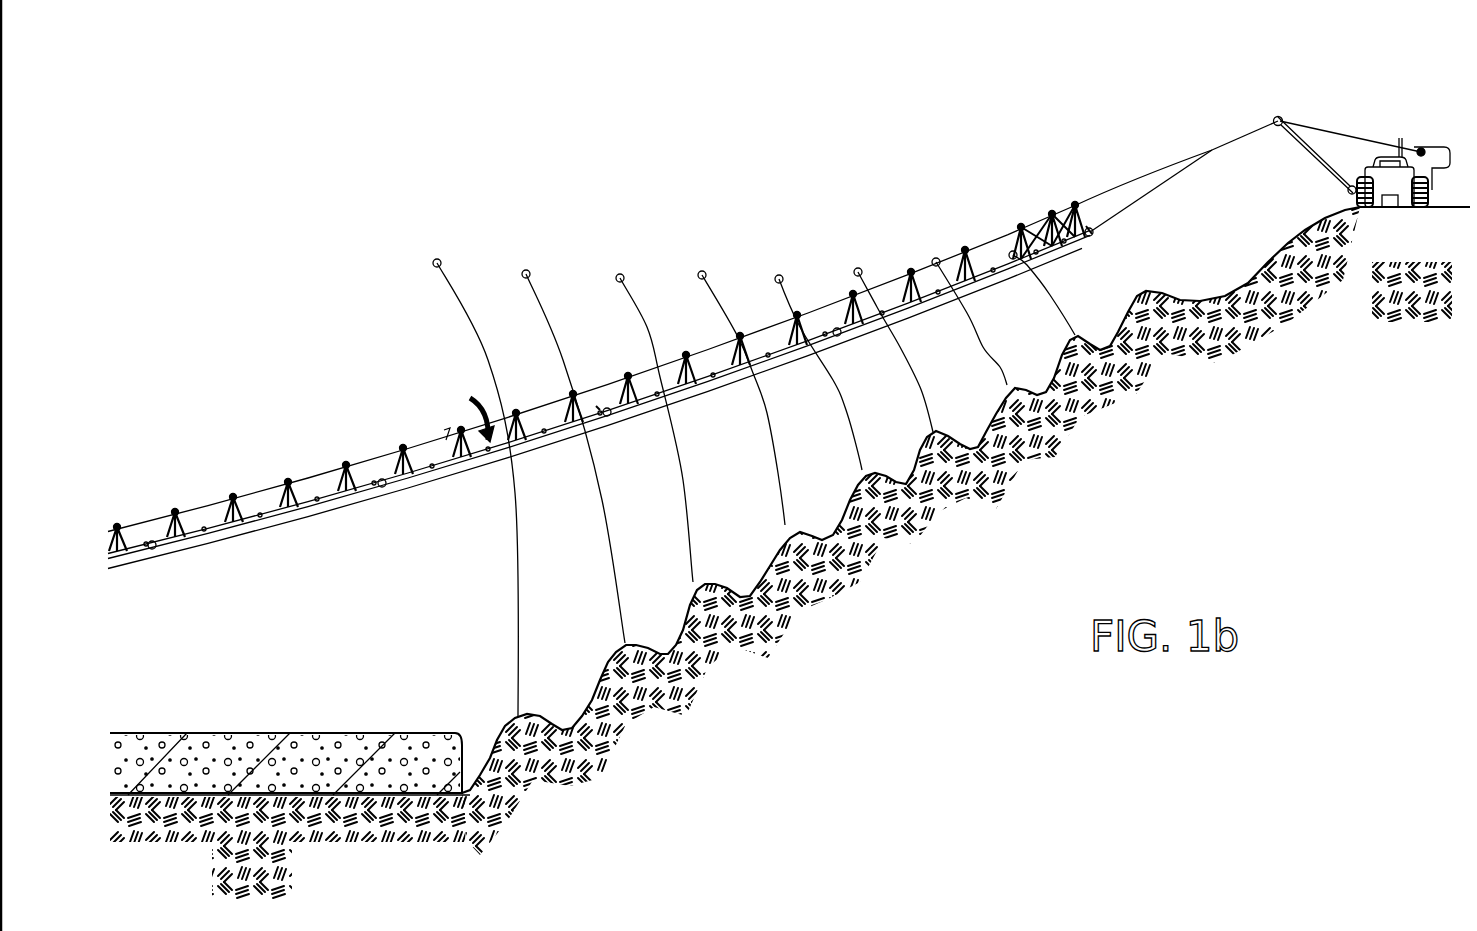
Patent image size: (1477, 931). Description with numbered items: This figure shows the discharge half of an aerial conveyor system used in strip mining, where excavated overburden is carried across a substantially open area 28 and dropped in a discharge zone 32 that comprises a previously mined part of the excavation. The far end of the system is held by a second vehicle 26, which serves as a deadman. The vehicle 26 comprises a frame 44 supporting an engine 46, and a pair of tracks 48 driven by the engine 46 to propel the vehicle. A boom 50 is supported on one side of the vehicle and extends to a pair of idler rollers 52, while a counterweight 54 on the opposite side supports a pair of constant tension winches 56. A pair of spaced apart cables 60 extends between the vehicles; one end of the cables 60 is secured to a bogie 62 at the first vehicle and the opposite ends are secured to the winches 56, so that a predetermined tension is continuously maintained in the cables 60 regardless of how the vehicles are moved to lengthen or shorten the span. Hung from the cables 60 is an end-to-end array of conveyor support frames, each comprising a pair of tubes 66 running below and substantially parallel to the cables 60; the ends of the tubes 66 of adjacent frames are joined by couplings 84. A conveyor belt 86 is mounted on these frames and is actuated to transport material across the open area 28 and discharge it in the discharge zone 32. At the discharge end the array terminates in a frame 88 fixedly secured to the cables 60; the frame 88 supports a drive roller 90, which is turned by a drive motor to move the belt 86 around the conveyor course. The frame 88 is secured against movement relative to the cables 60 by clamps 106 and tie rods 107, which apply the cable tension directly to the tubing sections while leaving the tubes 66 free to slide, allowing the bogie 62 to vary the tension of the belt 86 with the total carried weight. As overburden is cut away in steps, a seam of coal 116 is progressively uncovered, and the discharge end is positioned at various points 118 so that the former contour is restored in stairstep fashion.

The second vehicle 26 is at (1345, 149).
The open area 28 is at (318, 679).
The discharge zone 32 is at (812, 437).
The frame 44 is at (1390, 188).
The engine 46 is at (1380, 160).
The tracks 48 is at (1363, 208).
The boom 50 is at (1306, 152).
The idler rollers 52 is at (1275, 118).
The counterweight 54 is at (1438, 148).
The constant tension winches 56 is at (1419, 148).
The cables 60 is at (255, 492).
The bogie 62 is at (466, 415).
The tubes 66 is at (597, 408).
The couplings 84 is at (152, 550).
The conveyor belt 86 is at (292, 520).
The frame 88 is at (1048, 223).
The drive roller 90 is at (1098, 236).
The clamps 106 is at (1206, 149).
The tie rods 107 is at (1123, 207).
The seam of coal 116 is at (158, 745).
The points 118 is at (699, 272).